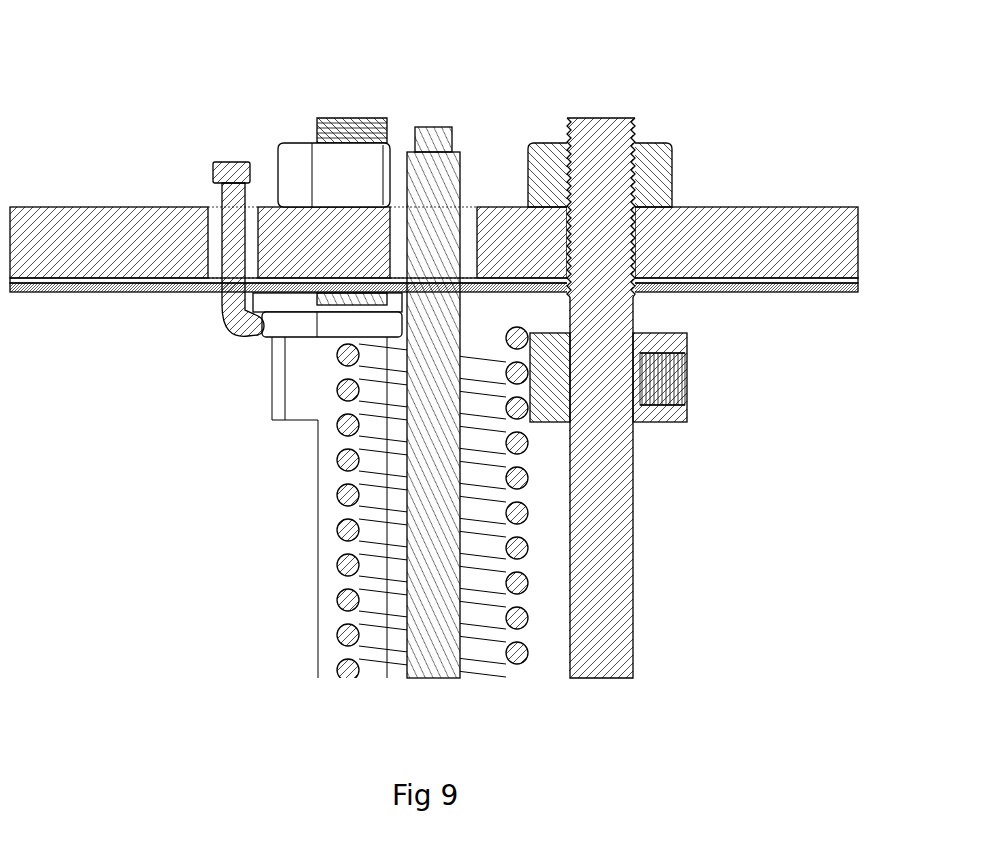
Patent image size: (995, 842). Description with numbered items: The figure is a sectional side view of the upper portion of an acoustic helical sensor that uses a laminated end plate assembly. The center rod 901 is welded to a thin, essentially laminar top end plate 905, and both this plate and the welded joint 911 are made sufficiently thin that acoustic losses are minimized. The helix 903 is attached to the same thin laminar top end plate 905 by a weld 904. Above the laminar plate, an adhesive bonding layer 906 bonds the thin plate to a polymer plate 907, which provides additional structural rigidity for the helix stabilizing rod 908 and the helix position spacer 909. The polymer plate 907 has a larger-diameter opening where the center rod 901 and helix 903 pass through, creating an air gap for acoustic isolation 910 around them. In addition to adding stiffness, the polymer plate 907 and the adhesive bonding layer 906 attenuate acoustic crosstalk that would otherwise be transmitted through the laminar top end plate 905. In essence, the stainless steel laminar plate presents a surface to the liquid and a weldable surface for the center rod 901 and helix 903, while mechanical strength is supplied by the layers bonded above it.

The center rod 901 is at (430, 610).
The helix 903 is at (345, 463).
The weld 904 is at (210, 292).
The laminar top end plate 905 is at (762, 290).
The adhesive bonding layer 906 is at (822, 278).
The polymer plate 907 is at (722, 235).
The helix stabilizing rod 908 is at (610, 486).
The helix position spacer 909 is at (557, 388).
The air gap for acoustic isolation 910 is at (213, 207).
The welded joint 911 is at (400, 295).